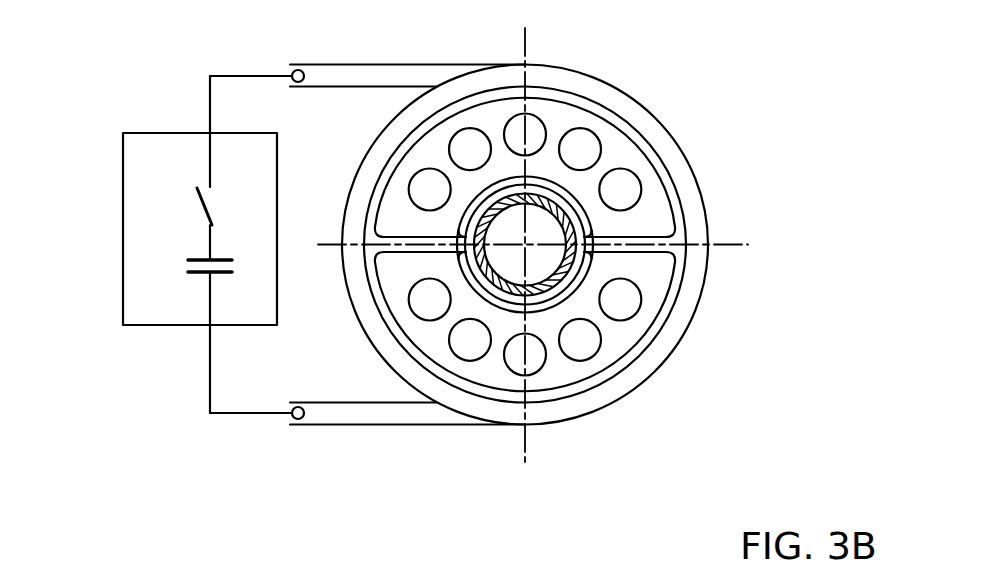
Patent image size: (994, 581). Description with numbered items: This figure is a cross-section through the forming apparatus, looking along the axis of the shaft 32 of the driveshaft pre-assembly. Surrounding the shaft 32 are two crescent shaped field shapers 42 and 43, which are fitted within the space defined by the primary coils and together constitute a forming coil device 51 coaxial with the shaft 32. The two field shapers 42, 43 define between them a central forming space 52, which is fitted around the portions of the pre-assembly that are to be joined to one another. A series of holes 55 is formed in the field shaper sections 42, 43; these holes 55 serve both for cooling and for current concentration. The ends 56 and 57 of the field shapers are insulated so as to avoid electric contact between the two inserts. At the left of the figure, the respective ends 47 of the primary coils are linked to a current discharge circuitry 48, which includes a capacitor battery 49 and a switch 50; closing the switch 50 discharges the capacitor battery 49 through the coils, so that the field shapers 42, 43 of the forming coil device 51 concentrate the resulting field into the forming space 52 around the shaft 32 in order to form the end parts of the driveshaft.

The shaft 32 is at (560, 278).
The field shaper 42 is at (627, 162).
The field shaper 43 is at (640, 320).
The ends 47 is at (373, 80).
The current discharge circuitry 48 is at (175, 327).
The capacitor battery 49 is at (192, 268).
The switch 50 is at (200, 207).
The forming coil device 51 is at (663, 167).
The forming space 52 is at (590, 260).
The holes 55 is at (583, 147).
The end 56 is at (642, 230).
The end 57 is at (648, 251).